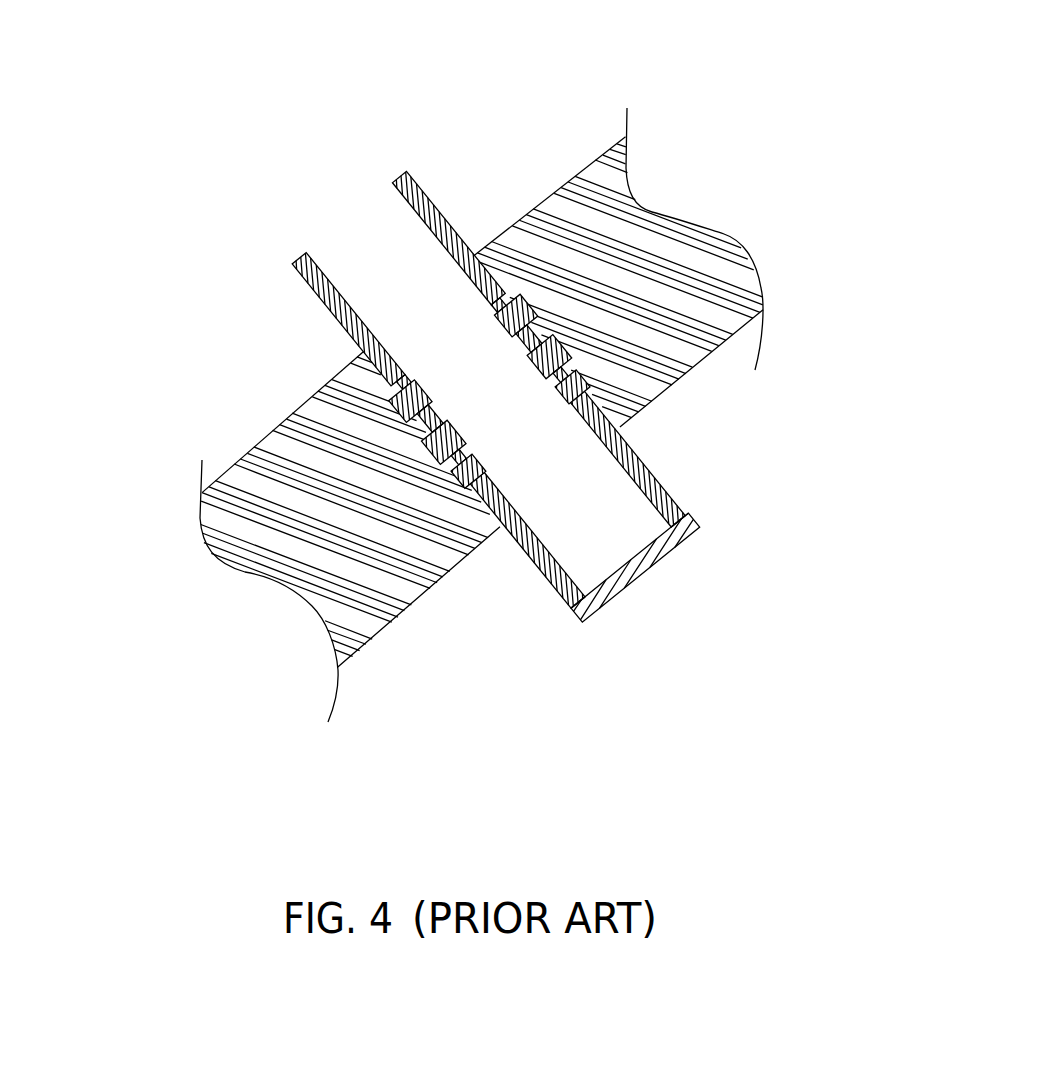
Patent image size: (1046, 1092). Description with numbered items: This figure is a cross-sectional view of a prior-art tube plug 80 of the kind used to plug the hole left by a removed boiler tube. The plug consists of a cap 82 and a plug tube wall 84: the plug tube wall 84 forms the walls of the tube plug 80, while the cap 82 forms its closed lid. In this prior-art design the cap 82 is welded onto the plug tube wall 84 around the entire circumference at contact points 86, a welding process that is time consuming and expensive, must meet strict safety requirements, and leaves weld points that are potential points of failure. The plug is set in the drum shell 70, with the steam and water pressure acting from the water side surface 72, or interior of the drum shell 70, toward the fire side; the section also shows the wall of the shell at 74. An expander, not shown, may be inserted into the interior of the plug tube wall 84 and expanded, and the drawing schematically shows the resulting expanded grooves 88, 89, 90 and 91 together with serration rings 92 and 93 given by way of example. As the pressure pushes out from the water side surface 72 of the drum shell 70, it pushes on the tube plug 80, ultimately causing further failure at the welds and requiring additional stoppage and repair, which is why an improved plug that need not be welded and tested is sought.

The drum shell 70 is at (395, 578).
The water side surface 72 is at (723, 348).
The pipe wall 74 is at (577, 173).
The tube plug 80 is at (463, 382).
The cap 82 is at (643, 580).
The plug tube wall 84 is at (397, 175).
The contact points 86 is at (683, 508).
The expanded groove 88 is at (498, 307).
The expanded groove 89 is at (412, 383).
The expanded groove 90 is at (535, 353).
The expanded groove 91 is at (445, 423).
The serration ring 92 is at (522, 290).
The serration ring 93 is at (383, 397).